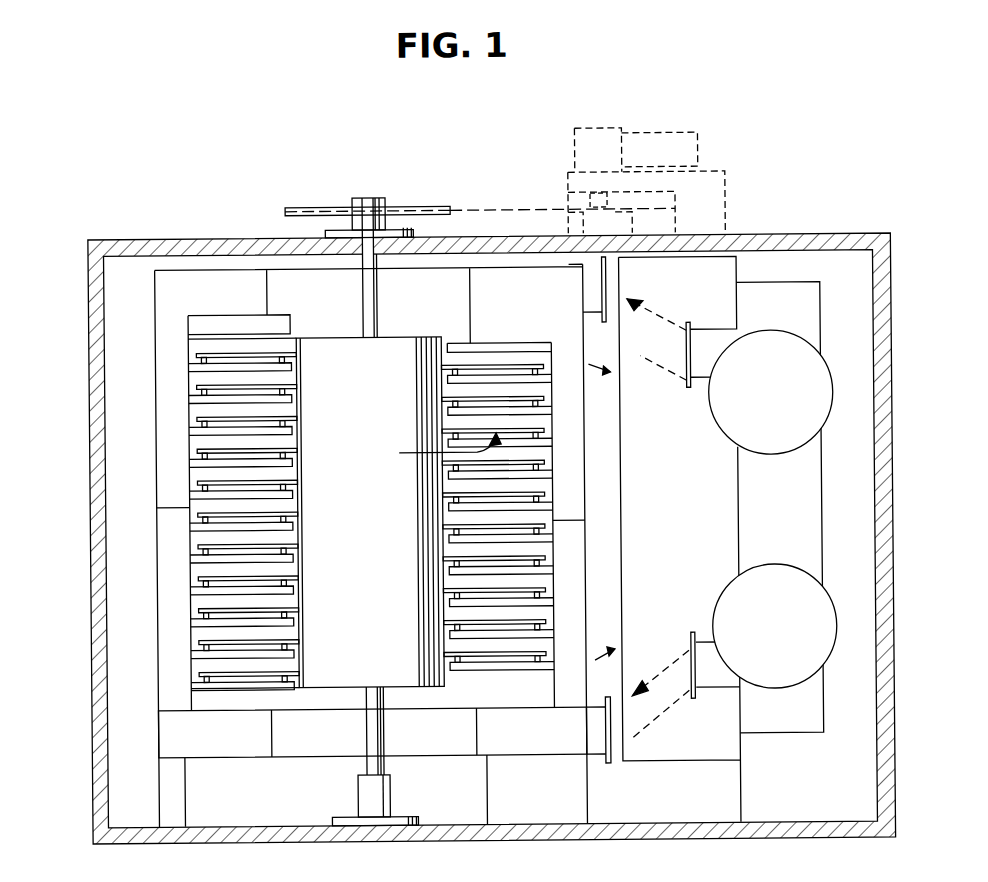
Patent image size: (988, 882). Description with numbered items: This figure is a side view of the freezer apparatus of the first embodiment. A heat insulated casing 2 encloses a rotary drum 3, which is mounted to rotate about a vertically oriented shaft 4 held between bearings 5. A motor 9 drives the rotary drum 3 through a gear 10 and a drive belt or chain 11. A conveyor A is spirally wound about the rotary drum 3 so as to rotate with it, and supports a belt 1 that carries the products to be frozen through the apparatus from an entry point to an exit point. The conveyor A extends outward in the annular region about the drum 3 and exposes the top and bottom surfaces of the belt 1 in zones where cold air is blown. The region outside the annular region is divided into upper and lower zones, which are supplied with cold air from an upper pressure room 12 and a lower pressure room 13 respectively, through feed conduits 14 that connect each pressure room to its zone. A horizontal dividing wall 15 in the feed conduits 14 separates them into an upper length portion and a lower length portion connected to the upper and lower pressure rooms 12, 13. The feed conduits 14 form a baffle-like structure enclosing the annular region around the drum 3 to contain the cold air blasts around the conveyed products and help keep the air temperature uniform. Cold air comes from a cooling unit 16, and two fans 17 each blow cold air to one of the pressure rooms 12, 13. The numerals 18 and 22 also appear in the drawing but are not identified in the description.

The belt 1 is at (284, 542).
The heat insulated casing 2 is at (166, 237).
The rotary drum 3 is at (335, 350).
The shaft 4 is at (372, 731).
The bearings 5 is at (336, 227).
The motor 9 is at (600, 129).
The gear 10 is at (643, 209).
The drive belt or chain 11 is at (490, 207).
The upper pressure room 12 is at (175, 285).
The lower pressure room 13 is at (186, 738).
The feed conduits 14 is at (157, 528).
The horizontal dividing wall 15 is at (178, 503).
The cooling unit 16 is at (812, 514).
The fans 17 is at (819, 374).
The spacers 18 is at (449, 410).
The lower chamber 22 is at (565, 792).
The conveyor A is at (439, 449).